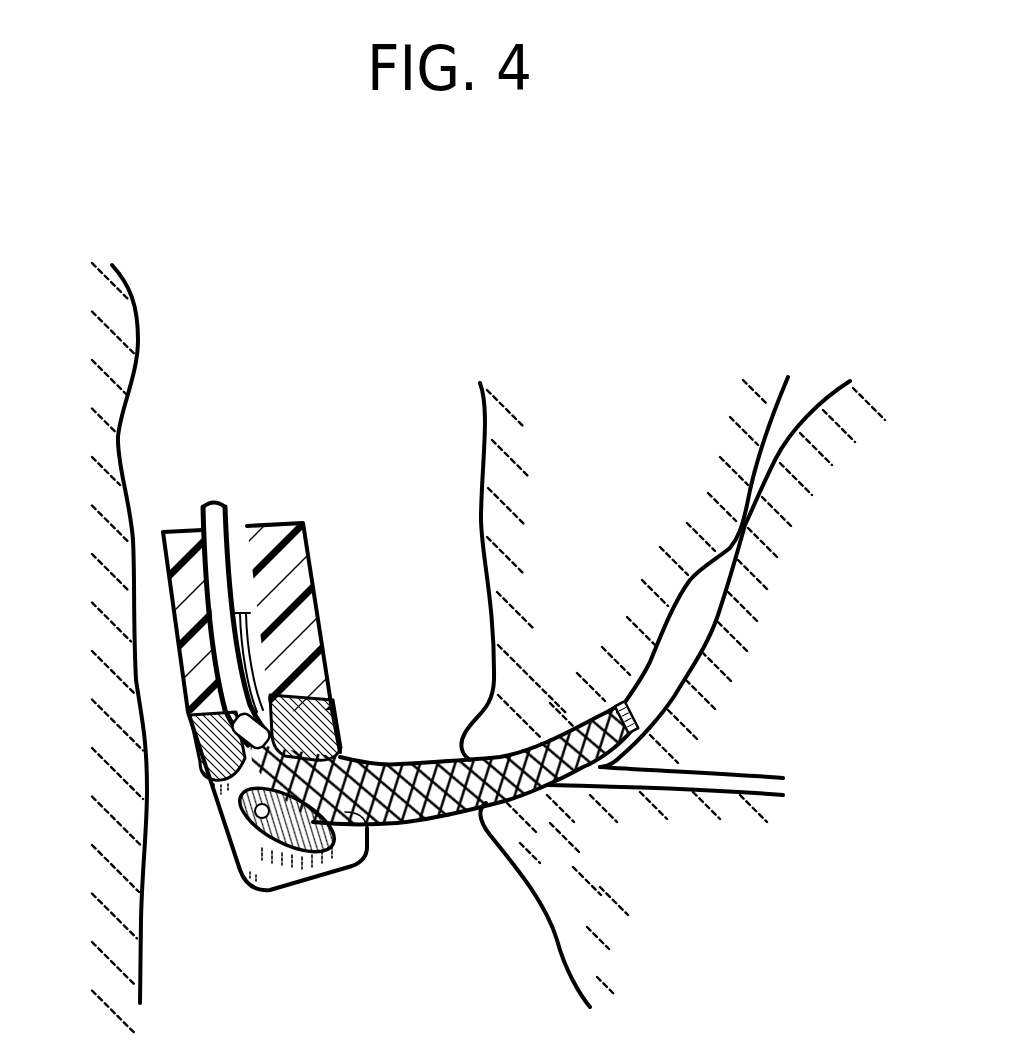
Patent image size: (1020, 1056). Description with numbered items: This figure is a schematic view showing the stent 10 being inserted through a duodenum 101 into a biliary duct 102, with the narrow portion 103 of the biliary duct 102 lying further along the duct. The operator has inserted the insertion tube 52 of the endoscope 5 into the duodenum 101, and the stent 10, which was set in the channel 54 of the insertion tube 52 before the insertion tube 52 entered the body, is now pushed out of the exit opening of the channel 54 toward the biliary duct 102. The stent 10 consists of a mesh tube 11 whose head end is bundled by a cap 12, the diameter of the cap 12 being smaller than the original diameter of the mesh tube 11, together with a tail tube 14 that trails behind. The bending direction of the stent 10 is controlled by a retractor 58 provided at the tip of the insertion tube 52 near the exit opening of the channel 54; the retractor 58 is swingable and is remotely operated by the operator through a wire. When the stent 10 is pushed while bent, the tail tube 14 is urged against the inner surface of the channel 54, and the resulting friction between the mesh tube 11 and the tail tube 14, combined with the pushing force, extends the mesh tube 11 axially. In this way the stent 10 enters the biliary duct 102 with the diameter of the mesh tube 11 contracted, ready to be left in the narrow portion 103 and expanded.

The endoscope 5 is at (228, 852).
The stent 10 is at (400, 742).
The mesh tube 11 is at (418, 827).
The cap 12 is at (620, 703).
The tail tube 14 is at (218, 590).
The insertion tube 52 is at (182, 629).
The channel 54 is at (226, 558).
The retractor 58 is at (290, 830).
The duodenum 101 is at (510, 961).
The biliary duct 102 is at (688, 645).
The narrow portion 103 is at (740, 505).